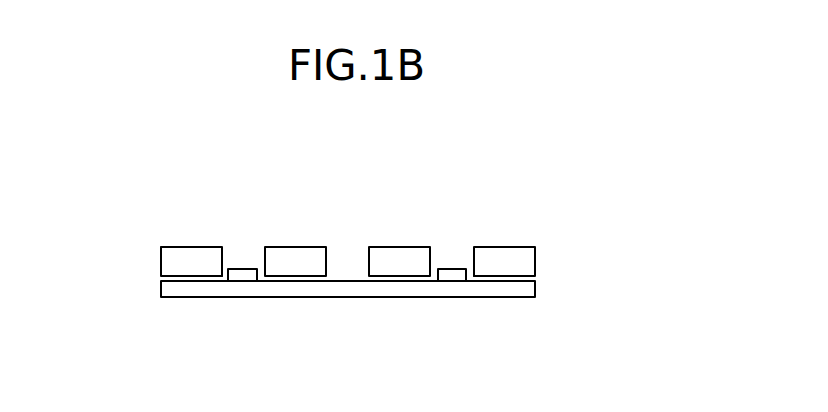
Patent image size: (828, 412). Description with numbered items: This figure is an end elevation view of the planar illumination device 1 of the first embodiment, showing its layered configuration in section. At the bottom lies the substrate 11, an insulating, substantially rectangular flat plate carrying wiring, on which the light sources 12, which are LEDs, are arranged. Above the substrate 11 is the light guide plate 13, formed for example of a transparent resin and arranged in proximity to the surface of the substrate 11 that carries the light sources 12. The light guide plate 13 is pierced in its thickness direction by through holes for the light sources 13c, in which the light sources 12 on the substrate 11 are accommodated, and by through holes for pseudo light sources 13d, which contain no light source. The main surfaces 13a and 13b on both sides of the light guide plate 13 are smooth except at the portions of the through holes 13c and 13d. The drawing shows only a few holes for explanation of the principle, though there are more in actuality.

The planar illumination device 1 is at (577, 192).
The substrate 11 is at (528, 287).
The light sources 12 is at (452, 276).
The light guide plate 13 is at (522, 257).
The main surface 13a is at (192, 247).
The main surface 13b is at (191, 273).
The through holes for the light sources 13c is at (226, 260).
The through holes for pseudo light sources 13d is at (363, 259).